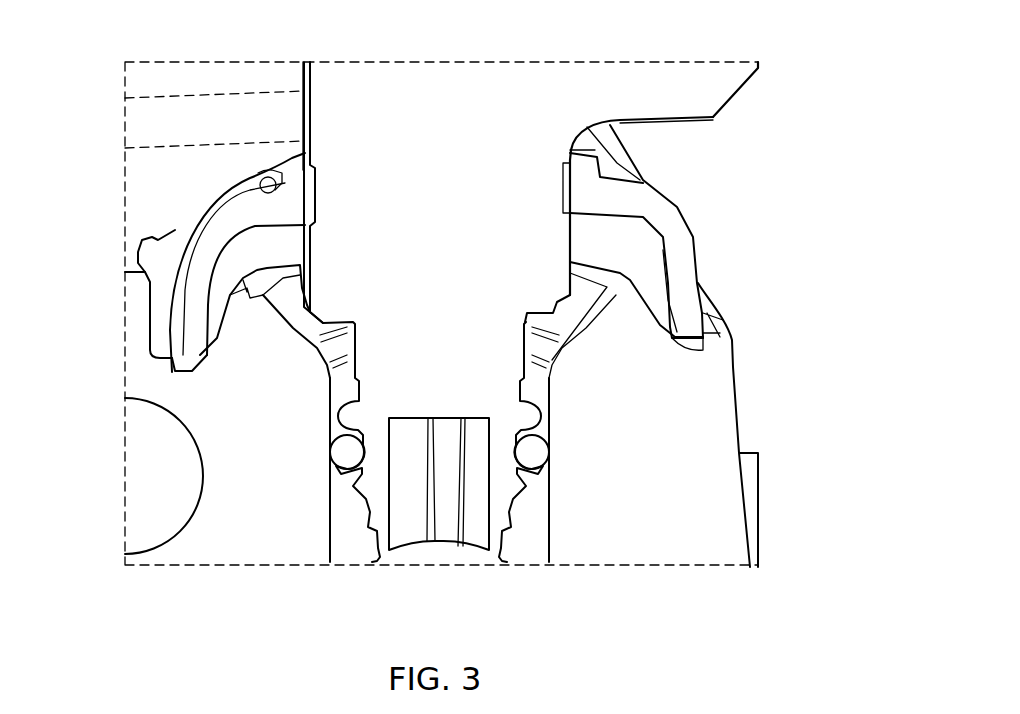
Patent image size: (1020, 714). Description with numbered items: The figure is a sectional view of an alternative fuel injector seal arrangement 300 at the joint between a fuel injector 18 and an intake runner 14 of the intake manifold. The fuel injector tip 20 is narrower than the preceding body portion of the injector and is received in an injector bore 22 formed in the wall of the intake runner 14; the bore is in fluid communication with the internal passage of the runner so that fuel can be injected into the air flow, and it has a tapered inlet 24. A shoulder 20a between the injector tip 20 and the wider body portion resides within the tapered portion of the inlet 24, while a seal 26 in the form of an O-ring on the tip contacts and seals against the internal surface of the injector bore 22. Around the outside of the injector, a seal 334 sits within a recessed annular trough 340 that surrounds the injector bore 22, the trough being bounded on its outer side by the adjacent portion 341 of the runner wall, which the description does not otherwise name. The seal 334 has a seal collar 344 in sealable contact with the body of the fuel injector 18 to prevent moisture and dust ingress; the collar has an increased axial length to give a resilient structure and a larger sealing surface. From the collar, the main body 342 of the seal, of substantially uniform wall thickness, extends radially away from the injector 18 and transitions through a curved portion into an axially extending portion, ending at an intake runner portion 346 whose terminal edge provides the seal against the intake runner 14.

The fuel injector seal arrangement 300 is at (665, 44).
The fuel injector 18 is at (483, 87).
The intake runner 14 is at (707, 420).
The fuel injector tip 20 is at (382, 545).
The shoulder 20a is at (310, 312).
The injector bore 22 is at (533, 538).
The tapered inlet 24 is at (582, 310).
The seal 26 is at (535, 455).
The seal 334 is at (680, 237).
The recessed annular trough 340 is at (150, 250).
The lip 341 is at (717, 323).
The main body 342 is at (185, 228).
The seal collar 344 is at (262, 178).
The intake runner portion 346 is at (178, 362).